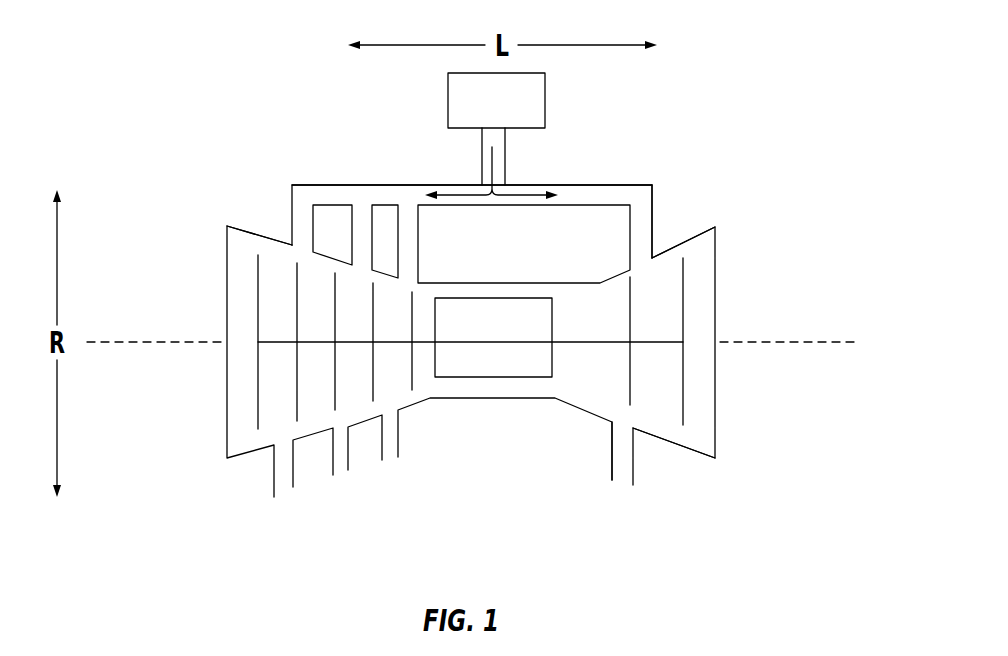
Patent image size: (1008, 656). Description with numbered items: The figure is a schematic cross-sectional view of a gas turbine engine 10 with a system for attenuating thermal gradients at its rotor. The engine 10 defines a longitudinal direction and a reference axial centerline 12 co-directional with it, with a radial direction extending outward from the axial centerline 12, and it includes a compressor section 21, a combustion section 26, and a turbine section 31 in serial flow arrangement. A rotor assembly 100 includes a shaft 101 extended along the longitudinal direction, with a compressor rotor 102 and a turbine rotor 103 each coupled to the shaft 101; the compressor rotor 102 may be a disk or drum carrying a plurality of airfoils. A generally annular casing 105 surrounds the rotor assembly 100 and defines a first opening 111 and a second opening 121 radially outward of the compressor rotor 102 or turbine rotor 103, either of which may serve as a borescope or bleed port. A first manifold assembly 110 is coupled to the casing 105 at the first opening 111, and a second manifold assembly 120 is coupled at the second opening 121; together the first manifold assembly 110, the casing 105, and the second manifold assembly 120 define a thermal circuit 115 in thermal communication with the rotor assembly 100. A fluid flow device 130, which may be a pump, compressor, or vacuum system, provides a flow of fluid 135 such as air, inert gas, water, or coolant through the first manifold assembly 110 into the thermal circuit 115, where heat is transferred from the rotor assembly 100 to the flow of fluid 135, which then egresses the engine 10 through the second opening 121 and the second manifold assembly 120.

The gas turbine engine 10 is at (219, 88).
The axial centerline 12 is at (832, 338).
The compressor section 21 is at (269, 200).
The combustion section 26 is at (500, 378).
The turbine section 31 is at (683, 200).
The rotor assembly 100 is at (640, 392).
The shaft 101 is at (582, 343).
The compressor rotor 102 is at (258, 400).
The turbine rotor 103 is at (683, 315).
The casing 105 is at (467, 283).
The first manifold assembly 110 is at (360, 185).
The first opening 111 is at (297, 249).
The thermal circuit 115 is at (592, 207).
The second manifold assembly 120 is at (400, 443).
The second opening 121 is at (283, 442).
The fluid flow device 130 is at (515, 115).
The flow of fluid 135 is at (527, 195).